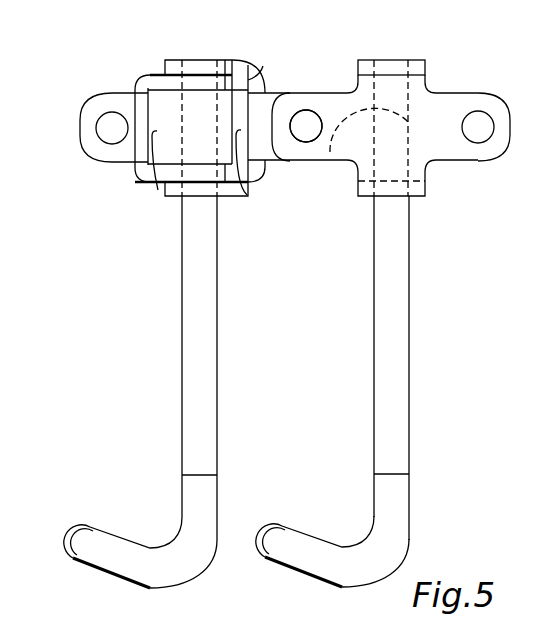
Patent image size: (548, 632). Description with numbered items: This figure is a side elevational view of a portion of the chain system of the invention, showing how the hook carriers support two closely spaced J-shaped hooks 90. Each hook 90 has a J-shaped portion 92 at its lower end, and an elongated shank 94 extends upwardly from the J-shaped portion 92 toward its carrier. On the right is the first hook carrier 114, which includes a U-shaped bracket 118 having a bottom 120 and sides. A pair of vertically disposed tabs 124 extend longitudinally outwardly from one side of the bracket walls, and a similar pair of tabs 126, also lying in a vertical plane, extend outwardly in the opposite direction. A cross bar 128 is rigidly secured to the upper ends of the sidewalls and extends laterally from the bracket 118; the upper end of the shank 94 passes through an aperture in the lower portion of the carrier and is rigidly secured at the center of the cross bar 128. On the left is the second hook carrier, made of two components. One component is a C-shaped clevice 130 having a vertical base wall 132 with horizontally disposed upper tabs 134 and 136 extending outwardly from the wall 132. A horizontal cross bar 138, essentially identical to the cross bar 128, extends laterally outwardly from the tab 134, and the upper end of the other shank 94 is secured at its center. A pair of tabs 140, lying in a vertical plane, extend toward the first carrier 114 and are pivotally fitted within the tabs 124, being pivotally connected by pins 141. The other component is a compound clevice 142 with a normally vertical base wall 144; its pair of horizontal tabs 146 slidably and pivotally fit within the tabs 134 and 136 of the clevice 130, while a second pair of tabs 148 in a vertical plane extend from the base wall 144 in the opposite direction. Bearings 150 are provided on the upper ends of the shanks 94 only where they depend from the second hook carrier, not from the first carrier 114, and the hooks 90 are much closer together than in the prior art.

The J-shaped hook 90 is at (220, 434).
The J-shaped portion 92 is at (125, 568).
The elongated shank 94 is at (186, 312).
The first hook carrier 114 is at (354, 58).
The U-shaped bracket 118 is at (371, 222).
The bottom 120 is at (415, 198).
The tabs 124 is at (288, 108).
The tabs 126 is at (475, 93).
The cross bar 128 is at (388, 60).
The C-shaped clevice 130 is at (202, 58).
The vertical base wall 132 is at (247, 195).
The upper tab 134 is at (263, 63).
The tab 136 is at (190, 196).
The horizontal cross bar 138 is at (195, 60).
The tabs 140 is at (412, 113).
The pins 141 is at (307, 128).
The compound clevice 142 is at (134, 72).
The base wall 144 is at (158, 190).
The tabs 146 is at (227, 79).
The tabs 148 is at (103, 95).
The bearings 150 is at (193, 128).